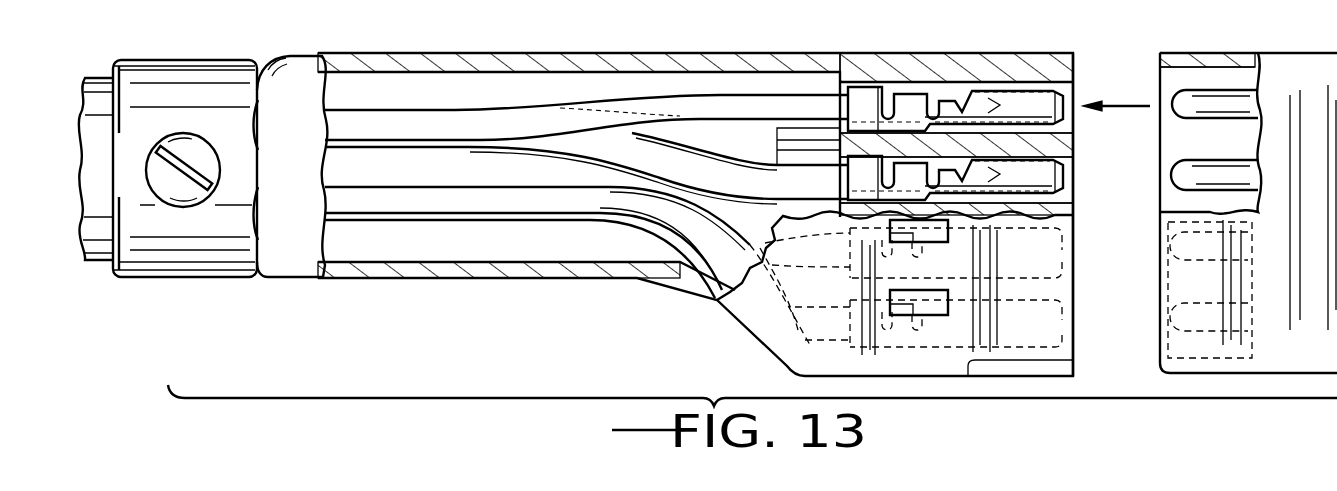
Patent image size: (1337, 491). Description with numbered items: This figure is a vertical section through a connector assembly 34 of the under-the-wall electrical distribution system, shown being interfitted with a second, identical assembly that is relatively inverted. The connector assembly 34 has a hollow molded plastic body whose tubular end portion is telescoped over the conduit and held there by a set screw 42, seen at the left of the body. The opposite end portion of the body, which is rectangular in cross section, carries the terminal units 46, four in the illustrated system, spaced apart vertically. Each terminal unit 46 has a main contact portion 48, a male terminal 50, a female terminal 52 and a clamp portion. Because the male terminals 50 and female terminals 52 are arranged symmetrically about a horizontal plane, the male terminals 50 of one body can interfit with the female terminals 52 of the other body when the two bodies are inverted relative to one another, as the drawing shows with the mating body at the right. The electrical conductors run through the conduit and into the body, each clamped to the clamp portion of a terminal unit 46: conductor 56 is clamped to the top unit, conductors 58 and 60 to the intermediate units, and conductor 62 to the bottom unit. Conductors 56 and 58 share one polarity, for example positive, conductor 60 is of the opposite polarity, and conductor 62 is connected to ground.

The connector assembly 34 is at (860, 52).
The set screw 42 is at (170, 206).
The terminal unit 46 is at (922, 96).
The main contact portion 48 is at (937, 108).
The male terminal 50 is at (1213, 108).
The female terminal 52 is at (1073, 117).
The conductor 56 is at (789, 121).
The conductor 58 is at (817, 191).
The conductor 60 is at (762, 230).
The conductor 62 is at (559, 214).